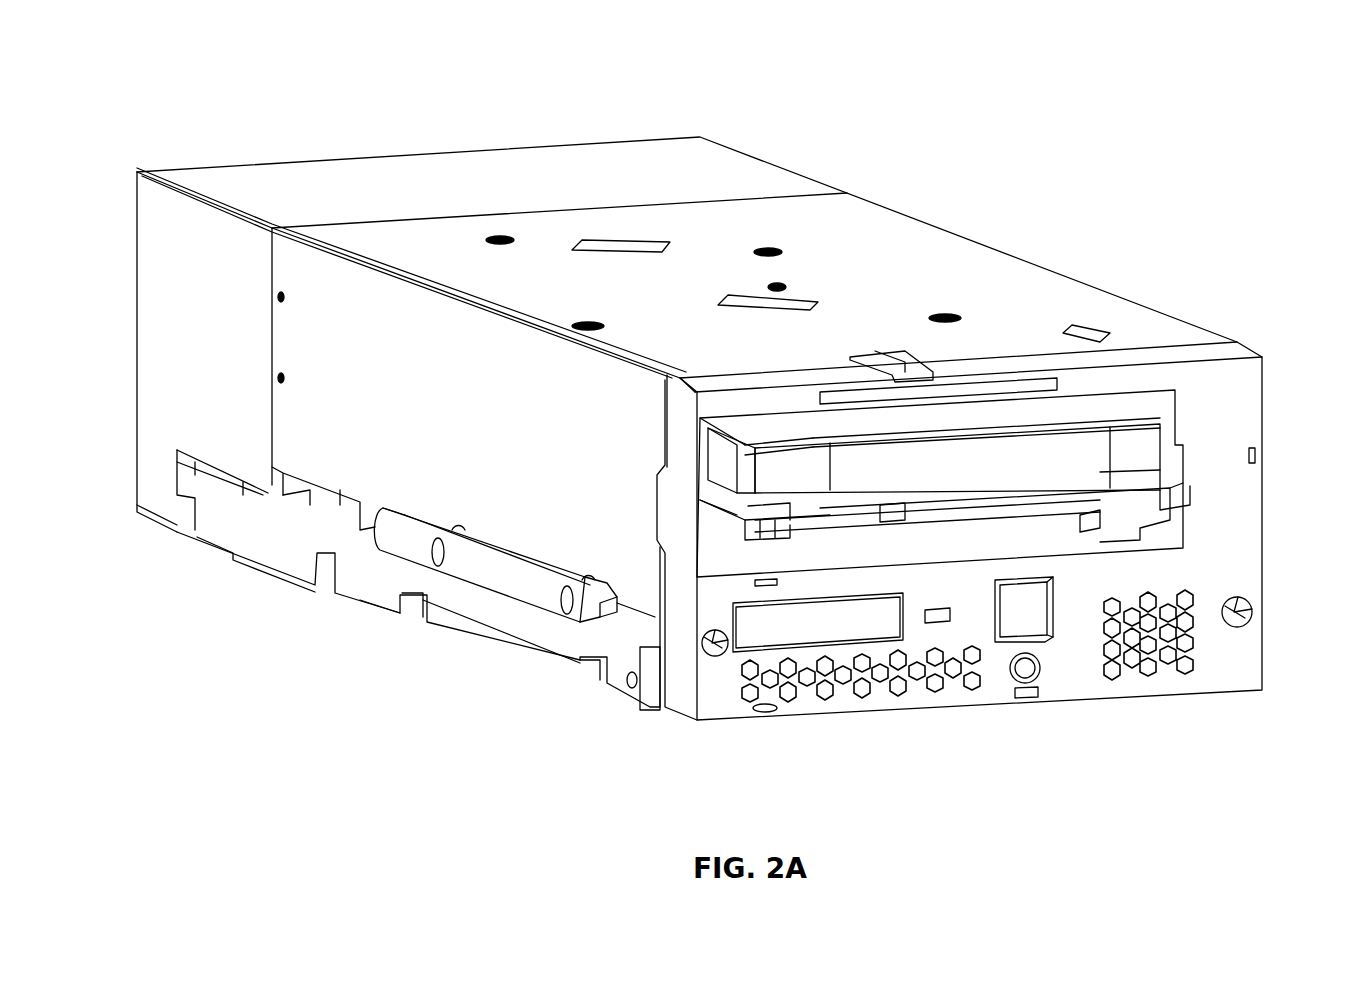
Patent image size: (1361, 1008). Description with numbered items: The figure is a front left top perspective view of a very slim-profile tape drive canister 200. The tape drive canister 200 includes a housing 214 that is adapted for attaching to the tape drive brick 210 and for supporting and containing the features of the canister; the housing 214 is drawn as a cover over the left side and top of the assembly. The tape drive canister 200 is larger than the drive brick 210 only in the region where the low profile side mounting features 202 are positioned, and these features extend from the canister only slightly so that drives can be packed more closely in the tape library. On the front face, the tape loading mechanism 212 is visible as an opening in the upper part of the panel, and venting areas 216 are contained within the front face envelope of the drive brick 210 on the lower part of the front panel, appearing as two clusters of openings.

The tape drive canister 200 is at (1138, 204).
The low profile side mounting features 202 is at (500, 578).
The tape drive brick 210 is at (932, 252).
The tape loading mechanism 212 is at (1183, 432).
The housing 214 is at (397, 183).
The venting areas 216 is at (866, 700).